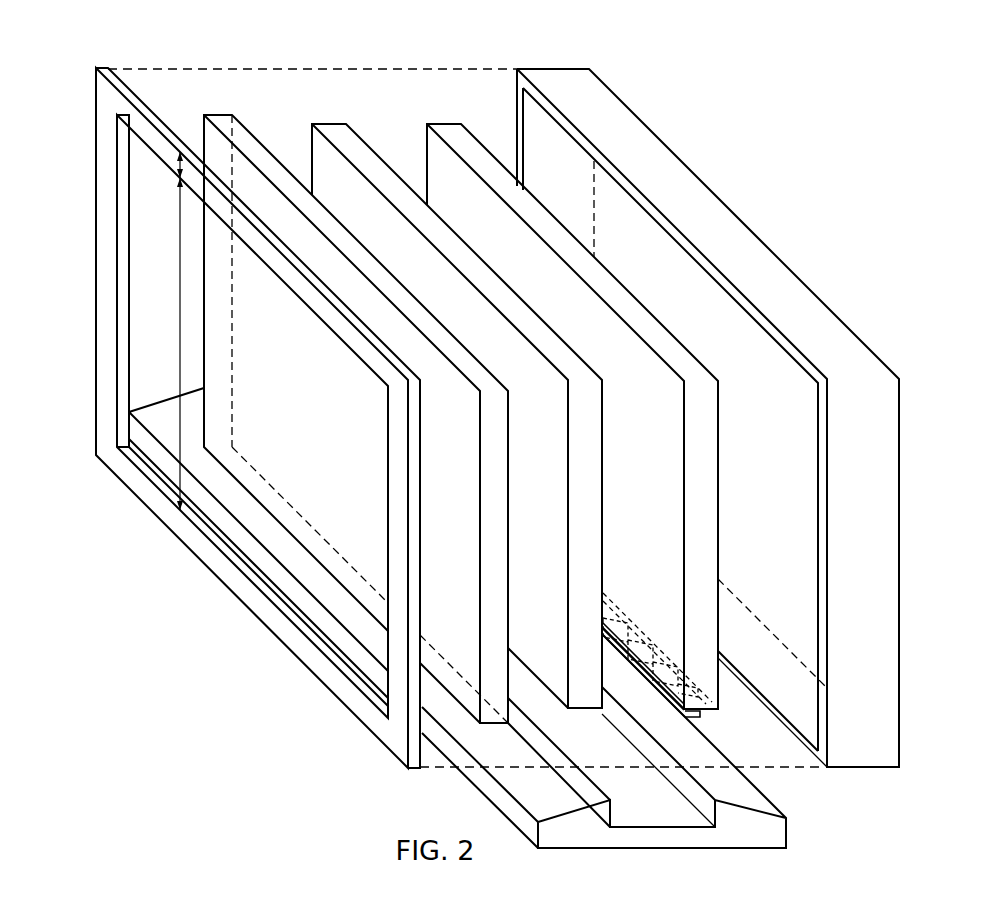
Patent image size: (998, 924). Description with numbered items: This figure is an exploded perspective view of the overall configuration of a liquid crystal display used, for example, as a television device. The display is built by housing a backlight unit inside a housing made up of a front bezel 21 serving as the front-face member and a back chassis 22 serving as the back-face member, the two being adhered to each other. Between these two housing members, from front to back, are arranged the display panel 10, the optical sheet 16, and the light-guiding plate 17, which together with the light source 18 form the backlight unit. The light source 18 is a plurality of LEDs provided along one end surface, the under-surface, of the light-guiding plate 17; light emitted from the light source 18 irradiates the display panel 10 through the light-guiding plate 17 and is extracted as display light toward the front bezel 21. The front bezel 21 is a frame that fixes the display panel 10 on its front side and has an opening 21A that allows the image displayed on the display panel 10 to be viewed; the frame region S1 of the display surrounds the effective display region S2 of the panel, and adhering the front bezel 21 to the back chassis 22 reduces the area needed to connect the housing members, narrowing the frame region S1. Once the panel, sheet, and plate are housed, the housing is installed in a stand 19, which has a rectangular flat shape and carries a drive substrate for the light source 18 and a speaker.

The front bezel 21 is at (120, 88).
The display panel 10 is at (217, 122).
The optical sheet 16 is at (328, 128).
The light-guiding plate 17 is at (443, 128).
The back chassis 22 is at (555, 78).
The light source 18 is at (693, 713).
The stand 19 is at (777, 833).
The frame region S1 is at (180, 167).
The effective display region S2 is at (180, 297).
The opening 21A is at (272, 340).